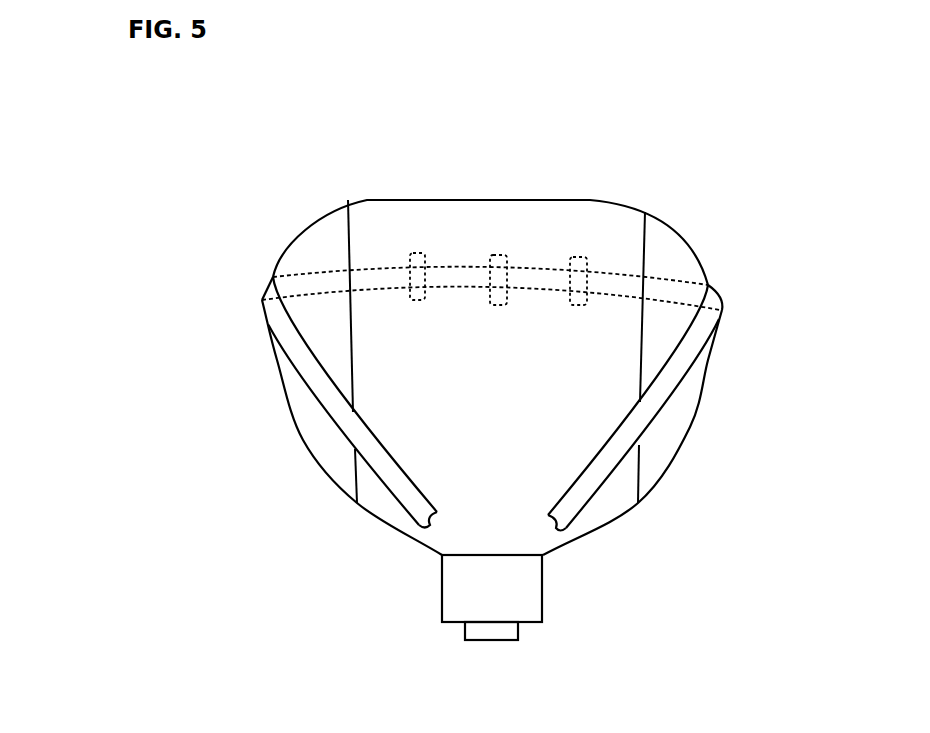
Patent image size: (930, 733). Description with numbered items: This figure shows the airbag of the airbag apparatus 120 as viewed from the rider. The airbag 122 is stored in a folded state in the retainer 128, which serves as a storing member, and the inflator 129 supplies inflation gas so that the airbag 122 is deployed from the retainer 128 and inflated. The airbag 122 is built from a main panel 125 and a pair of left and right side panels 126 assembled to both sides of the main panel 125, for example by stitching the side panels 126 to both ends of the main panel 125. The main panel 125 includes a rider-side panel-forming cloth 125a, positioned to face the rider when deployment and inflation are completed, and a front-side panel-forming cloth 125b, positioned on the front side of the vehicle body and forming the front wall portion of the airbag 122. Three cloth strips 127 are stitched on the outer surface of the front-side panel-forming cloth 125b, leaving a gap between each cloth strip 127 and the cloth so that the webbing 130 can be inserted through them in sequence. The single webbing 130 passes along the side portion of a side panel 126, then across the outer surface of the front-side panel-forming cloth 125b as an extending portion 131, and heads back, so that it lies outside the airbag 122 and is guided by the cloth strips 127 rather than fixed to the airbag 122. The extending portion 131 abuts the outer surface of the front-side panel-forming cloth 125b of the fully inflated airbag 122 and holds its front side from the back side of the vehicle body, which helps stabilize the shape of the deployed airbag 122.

The airbag apparatus 120 is at (525, 391).
The airbag 122 is at (695, 238).
The main panel 125 is at (491, 194).
The rider-side panel-forming cloth 125a is at (625, 225).
The front-side panel-forming cloth 125b is at (580, 215).
The side panel 126 is at (315, 440).
The cloth strip 127 is at (580, 257).
The retainer 128 is at (553, 585).
The inflator 129 is at (488, 628).
The webbing 130 is at (301, 401).
The extending portion 131 is at (387, 278).